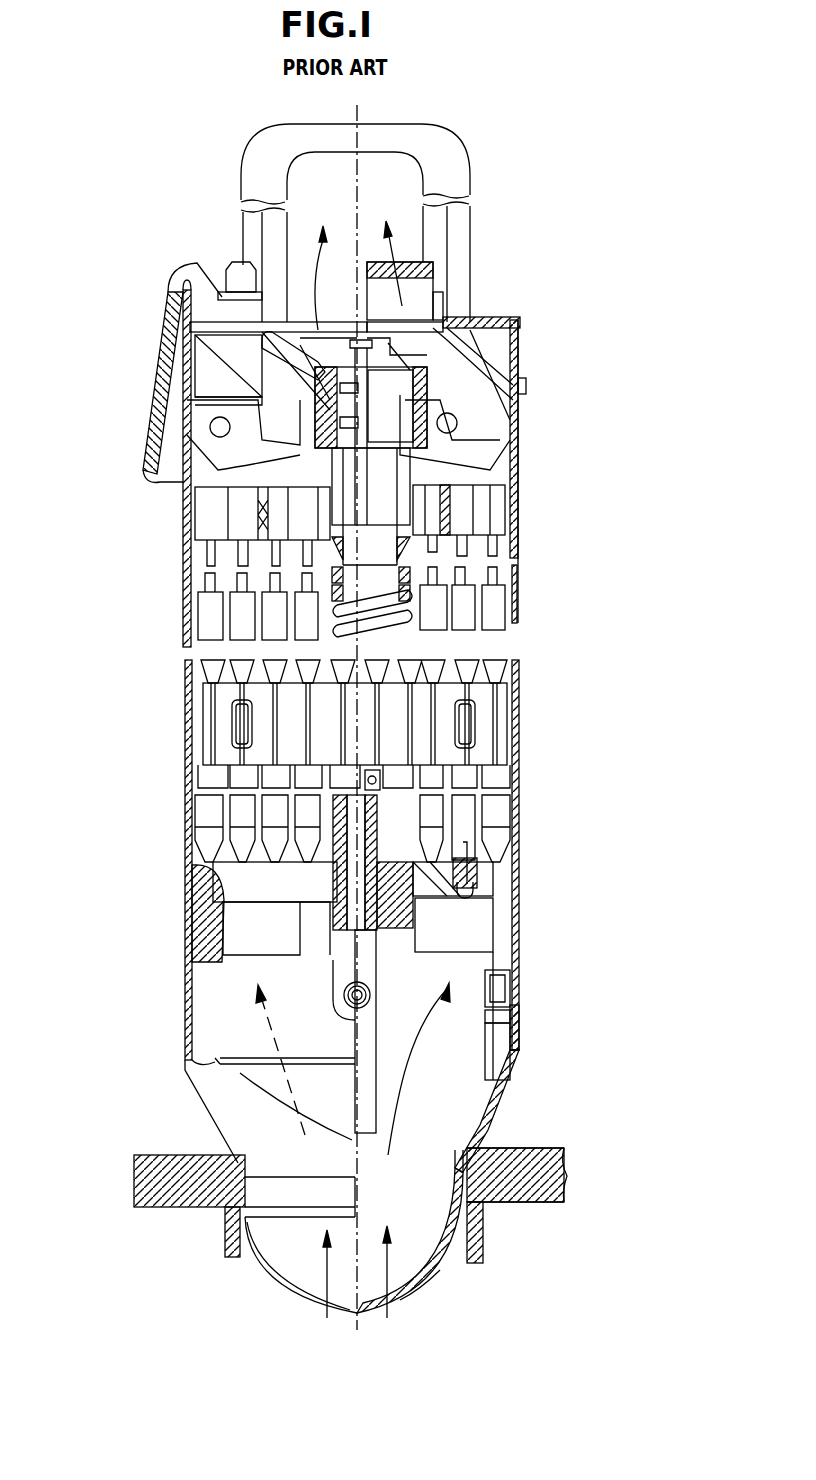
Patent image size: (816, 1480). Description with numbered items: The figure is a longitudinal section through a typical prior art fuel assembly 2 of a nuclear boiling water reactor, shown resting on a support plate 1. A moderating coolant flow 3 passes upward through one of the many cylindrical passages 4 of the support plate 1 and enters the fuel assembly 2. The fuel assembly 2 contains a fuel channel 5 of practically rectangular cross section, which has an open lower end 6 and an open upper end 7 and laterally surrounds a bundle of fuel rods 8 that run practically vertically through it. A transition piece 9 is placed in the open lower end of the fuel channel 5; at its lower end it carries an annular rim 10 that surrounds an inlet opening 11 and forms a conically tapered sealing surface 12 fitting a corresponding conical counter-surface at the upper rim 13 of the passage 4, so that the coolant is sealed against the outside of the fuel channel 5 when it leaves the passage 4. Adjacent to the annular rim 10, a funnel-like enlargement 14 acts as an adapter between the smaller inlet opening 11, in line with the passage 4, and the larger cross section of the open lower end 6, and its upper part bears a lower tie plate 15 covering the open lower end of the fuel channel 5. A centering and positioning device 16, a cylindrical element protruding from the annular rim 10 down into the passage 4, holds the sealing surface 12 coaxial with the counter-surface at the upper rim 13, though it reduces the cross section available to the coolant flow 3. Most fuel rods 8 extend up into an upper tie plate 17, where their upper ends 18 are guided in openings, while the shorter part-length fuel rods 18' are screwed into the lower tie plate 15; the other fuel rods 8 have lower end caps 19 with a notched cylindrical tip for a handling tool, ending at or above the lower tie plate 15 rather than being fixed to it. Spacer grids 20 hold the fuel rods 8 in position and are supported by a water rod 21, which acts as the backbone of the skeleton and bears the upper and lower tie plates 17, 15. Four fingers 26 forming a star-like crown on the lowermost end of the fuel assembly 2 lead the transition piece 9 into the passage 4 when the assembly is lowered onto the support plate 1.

The support plate 1 is at (505, 1146).
The fuel assembly 2 is at (546, 426).
The coolant flow 3 is at (385, 1302).
The cylindrical passage 4 is at (458, 1256).
The fuel channel 5 is at (515, 558).
The open lower end 6 is at (520, 1020).
The open upper end 7 is at (500, 322).
The fuel rods 8 is at (490, 628).
The transition piece 9 is at (200, 1038).
The annular rim 10 is at (480, 1163).
The inlet opening 11 is at (277, 1227).
The sealing surface 12 is at (480, 1168).
The upper rim 13 is at (215, 1158).
The funnel-like enlargement 14 is at (195, 1096).
The lower tie plate 15 is at (223, 882).
The centering and positioning device 16 is at (468, 1220).
The upper tie plate 17 is at (495, 498).
The upper ends 18 is at (503, 598).
The shorter fuel rods 18' is at (218, 817).
The lower end caps 19 is at (495, 842).
The spacer grids 20 is at (485, 710).
The water rod 21 is at (450, 455).
The fingers 26 is at (440, 1278).